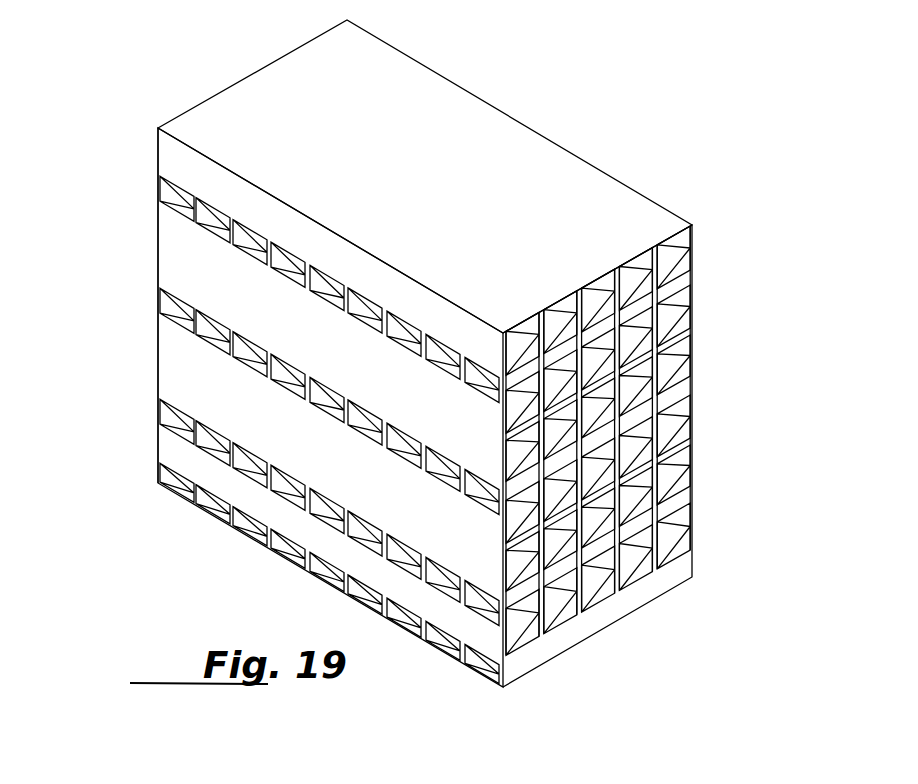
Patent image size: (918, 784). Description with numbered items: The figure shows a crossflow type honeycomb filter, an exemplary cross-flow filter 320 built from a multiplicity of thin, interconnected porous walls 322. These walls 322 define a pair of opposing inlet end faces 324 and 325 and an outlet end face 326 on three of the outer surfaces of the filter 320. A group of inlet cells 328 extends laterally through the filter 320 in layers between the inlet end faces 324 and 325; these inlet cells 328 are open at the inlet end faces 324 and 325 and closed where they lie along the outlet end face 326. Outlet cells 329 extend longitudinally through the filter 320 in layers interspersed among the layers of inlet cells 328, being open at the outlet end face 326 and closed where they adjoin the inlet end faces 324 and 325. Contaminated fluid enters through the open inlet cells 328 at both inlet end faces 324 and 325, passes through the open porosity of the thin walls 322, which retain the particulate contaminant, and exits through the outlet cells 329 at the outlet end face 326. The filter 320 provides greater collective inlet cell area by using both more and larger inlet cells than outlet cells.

The cross-flow filter 320 is at (541, 192).
The thin walls 322 is at (193, 313).
The inlet end face 324 is at (675, 507).
The inlet end face 325 is at (157, 242).
The outlet end face 326 is at (192, 378).
The inlet cells 328 is at (637, 385).
The outlet cells 329 is at (367, 592).